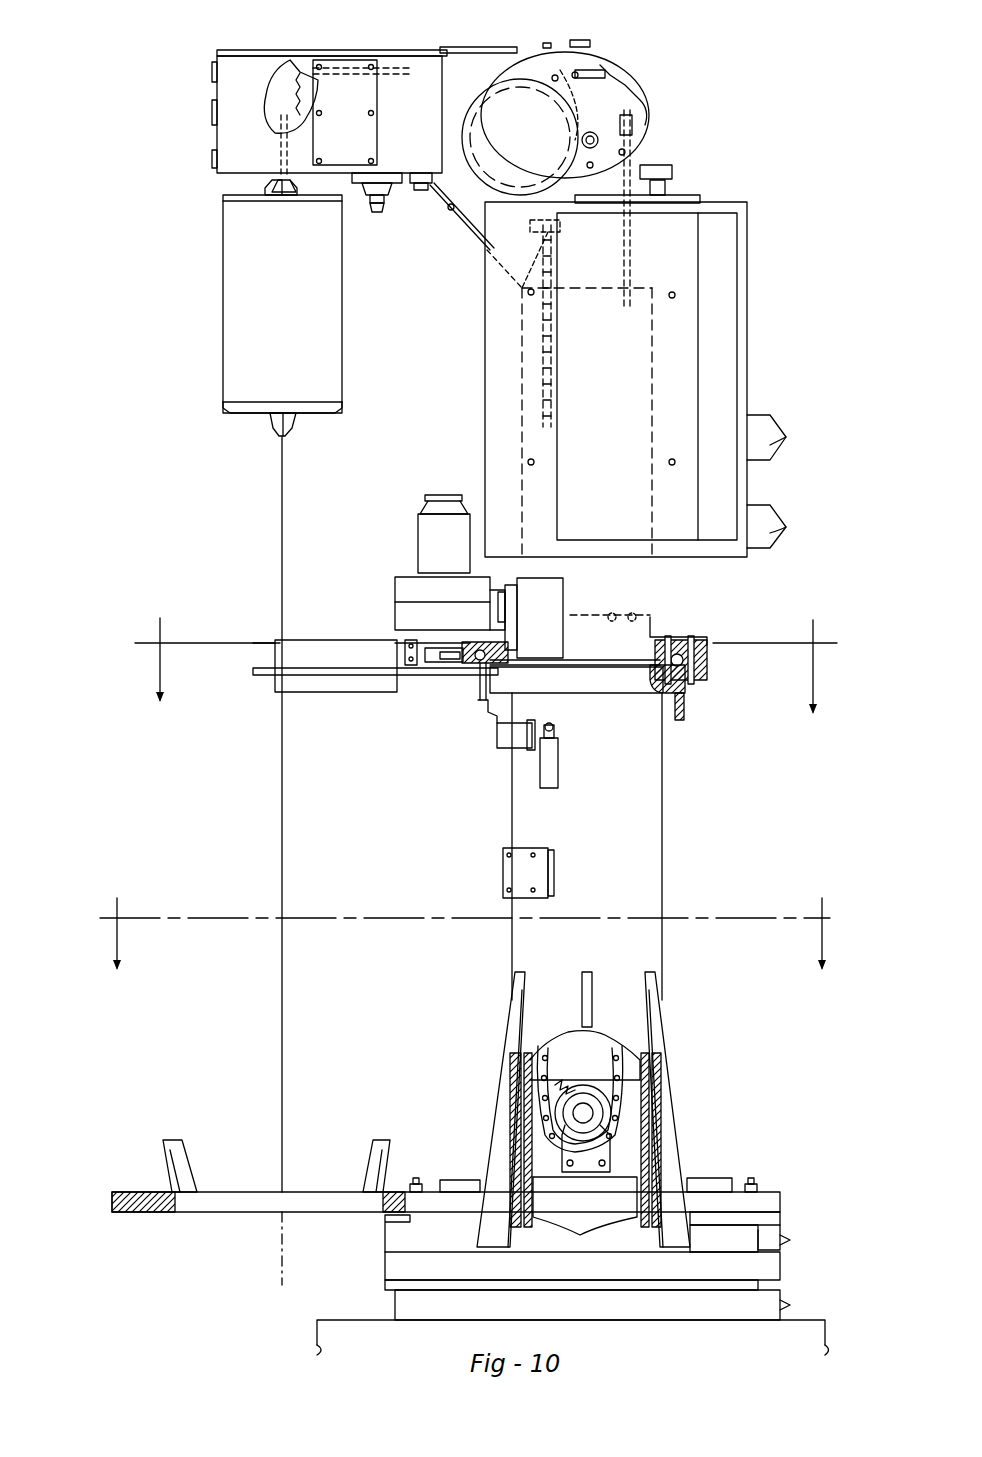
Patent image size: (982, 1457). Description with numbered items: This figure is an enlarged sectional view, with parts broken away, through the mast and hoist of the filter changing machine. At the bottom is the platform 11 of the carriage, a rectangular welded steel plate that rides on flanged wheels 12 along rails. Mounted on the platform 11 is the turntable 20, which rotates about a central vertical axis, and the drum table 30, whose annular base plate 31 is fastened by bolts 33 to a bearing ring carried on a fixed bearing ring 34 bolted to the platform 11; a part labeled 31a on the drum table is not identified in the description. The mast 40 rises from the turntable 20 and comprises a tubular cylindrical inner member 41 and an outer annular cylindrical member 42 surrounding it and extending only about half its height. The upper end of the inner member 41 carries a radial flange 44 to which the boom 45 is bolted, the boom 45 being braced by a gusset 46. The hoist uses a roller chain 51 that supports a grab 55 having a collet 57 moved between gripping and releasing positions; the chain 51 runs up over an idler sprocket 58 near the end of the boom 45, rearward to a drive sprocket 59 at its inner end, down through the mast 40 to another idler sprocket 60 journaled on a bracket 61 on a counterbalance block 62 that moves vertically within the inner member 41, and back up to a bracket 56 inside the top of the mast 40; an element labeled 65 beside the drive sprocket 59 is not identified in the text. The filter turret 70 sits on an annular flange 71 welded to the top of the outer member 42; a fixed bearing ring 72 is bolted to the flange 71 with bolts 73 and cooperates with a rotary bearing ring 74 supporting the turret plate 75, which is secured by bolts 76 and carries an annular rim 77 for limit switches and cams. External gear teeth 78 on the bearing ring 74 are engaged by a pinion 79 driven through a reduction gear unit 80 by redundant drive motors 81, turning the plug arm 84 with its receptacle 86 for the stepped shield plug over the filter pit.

The platform 11 is at (330, 1330).
The flanged wheels 12 is at (470, 928).
The turntable 20 is at (812, 1280).
The drum table 30 is at (760, 1135).
The annular base plate 31 is at (780, 1192).
The locating posts 31a is at (145, 1160).
The bolts 33 is at (418, 1178).
The fixed bearing ring 34 is at (380, 1260).
The mast 40 is at (655, 575).
The tubular cylindrical inner member 41 is at (665, 1050).
The outer annular cylindrical member 42 is at (665, 785).
The radial flange 44 is at (510, 995).
The boom 45 is at (390, 50).
The gusset 46 is at (428, 205).
The roller chain 51 is at (530, 340).
The grab 55 is at (282, 296).
The bracket 56 is at (530, 222).
The collet 57 is at (300, 428).
The idler sprocket 58 is at (300, 70).
The drive sprocket 59 is at (610, 100).
The idler sprocket 60 is at (605, 1090).
The bracket 61 is at (478, 1090).
The counterbalance block 62 is at (585, 1206).
The drive sprocket 65 is at (520, 137).
The filter turret 70 is at (360, 590).
The annular flange 71 is at (590, 695).
The fixed bearing ring 72 is at (520, 655).
The bolts 73 is at (658, 632).
The rotary bearing ring 74 is at (520, 650).
The turret plate 75 is at (483, 700).
The bolts 76 is at (700, 660).
The annular rim 77 is at (690, 712).
The external gear teeth 78 is at (458, 662).
The pinion 79 is at (435, 660).
The reduction gear unit 80 is at (395, 615).
The drive motor 81 is at (444, 534).
The plug arm 84 is at (265, 675).
The receptacle 86 is at (275, 643).